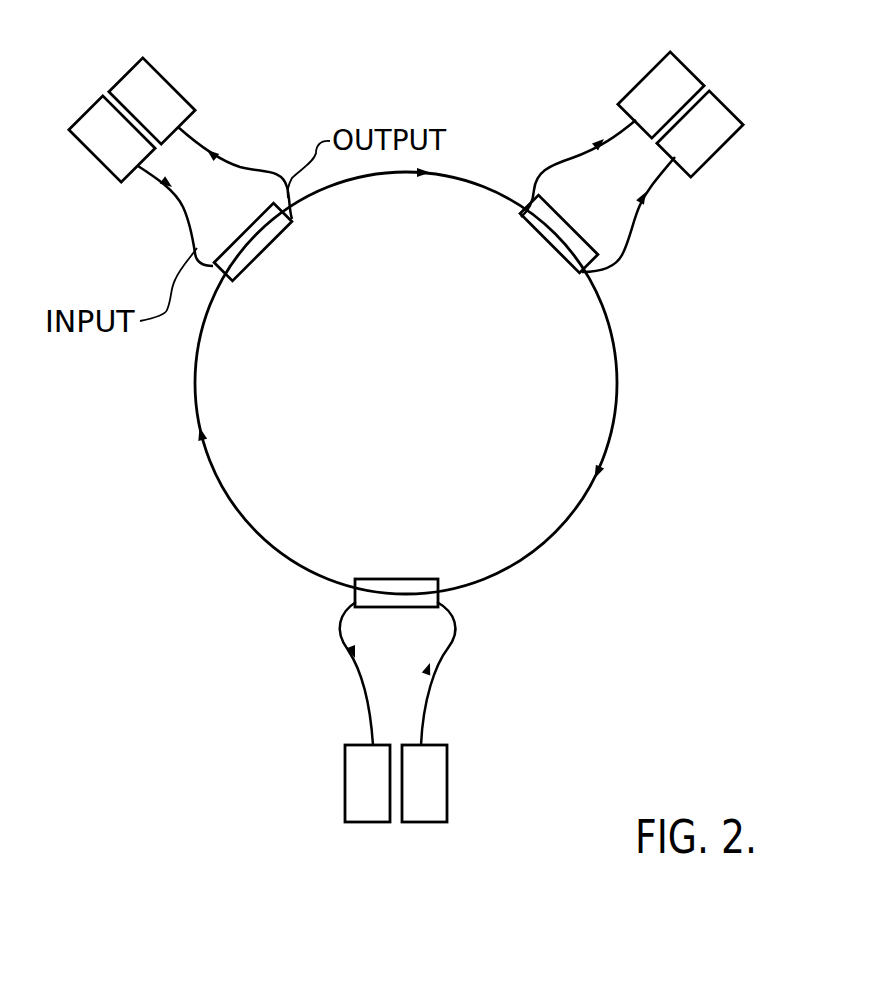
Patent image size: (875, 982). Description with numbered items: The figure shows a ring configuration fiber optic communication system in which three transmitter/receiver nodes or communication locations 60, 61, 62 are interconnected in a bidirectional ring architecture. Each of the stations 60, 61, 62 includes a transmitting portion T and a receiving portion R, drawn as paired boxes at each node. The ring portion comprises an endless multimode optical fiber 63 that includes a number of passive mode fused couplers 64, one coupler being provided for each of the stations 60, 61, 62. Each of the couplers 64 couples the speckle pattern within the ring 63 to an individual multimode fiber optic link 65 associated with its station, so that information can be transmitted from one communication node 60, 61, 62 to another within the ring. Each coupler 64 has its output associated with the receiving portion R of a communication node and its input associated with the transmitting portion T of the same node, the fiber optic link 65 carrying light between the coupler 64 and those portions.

The transmitter/receiver node 60 is at (722, 152).
The transmitter/receiver node 61 is at (190, 70).
The transmitter/receiver node 62 is at (456, 795).
The endless multimode optical fiber 63 is at (583, 517).
The passive mode fused coupler 64 is at (230, 279).
The multimode fiber optic link 65 is at (232, 193).